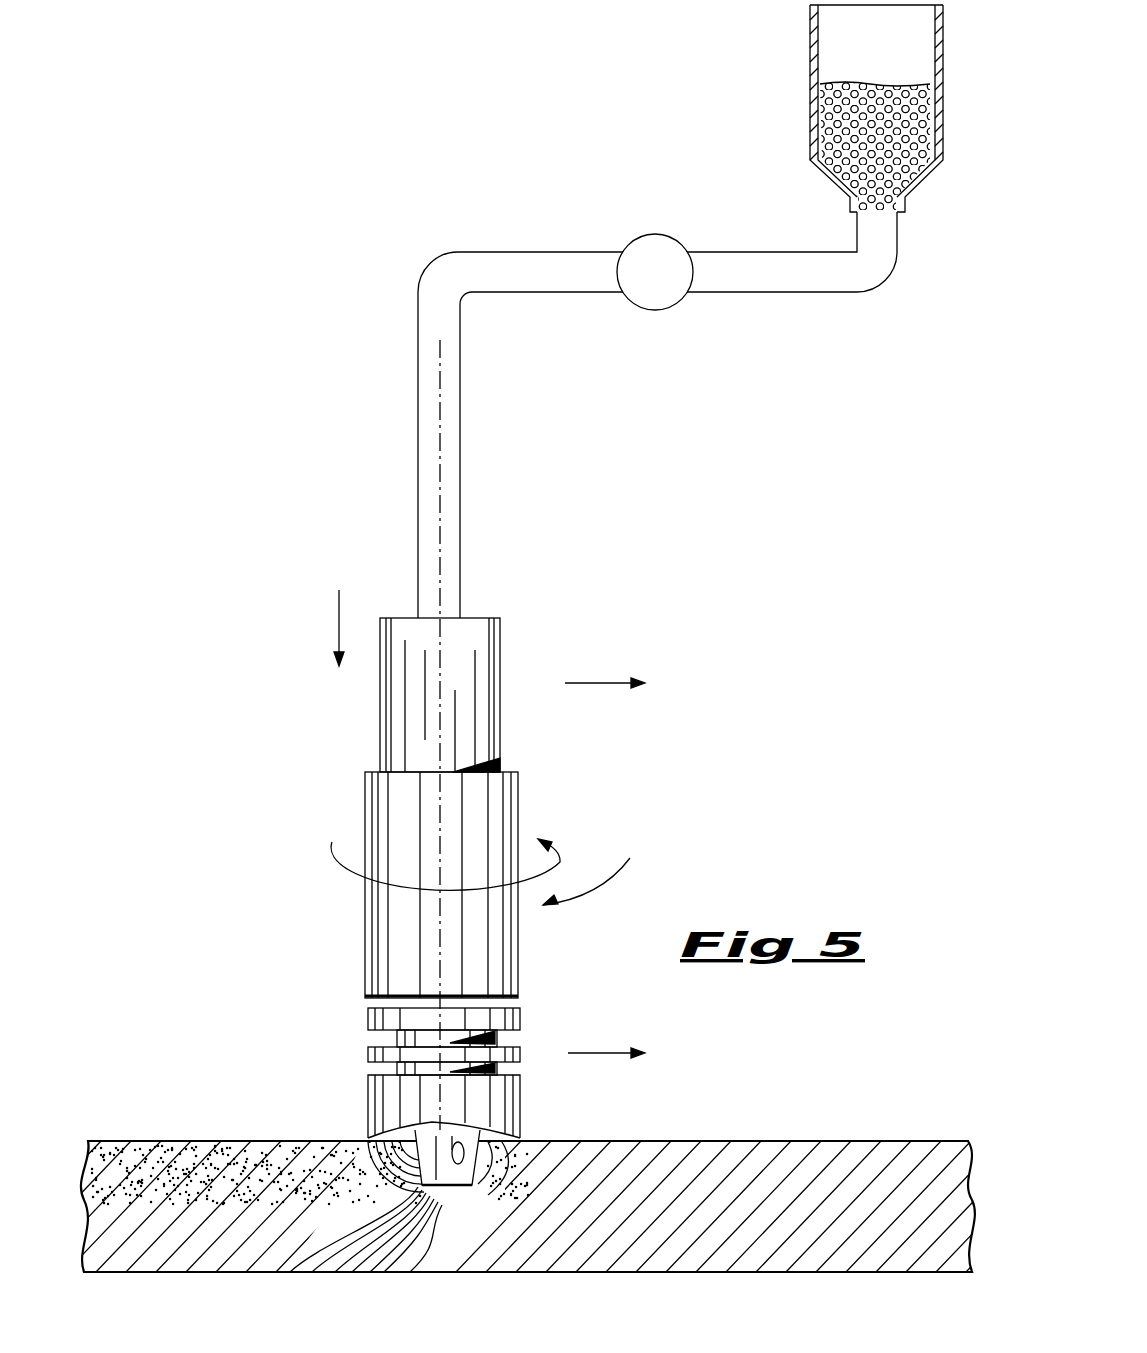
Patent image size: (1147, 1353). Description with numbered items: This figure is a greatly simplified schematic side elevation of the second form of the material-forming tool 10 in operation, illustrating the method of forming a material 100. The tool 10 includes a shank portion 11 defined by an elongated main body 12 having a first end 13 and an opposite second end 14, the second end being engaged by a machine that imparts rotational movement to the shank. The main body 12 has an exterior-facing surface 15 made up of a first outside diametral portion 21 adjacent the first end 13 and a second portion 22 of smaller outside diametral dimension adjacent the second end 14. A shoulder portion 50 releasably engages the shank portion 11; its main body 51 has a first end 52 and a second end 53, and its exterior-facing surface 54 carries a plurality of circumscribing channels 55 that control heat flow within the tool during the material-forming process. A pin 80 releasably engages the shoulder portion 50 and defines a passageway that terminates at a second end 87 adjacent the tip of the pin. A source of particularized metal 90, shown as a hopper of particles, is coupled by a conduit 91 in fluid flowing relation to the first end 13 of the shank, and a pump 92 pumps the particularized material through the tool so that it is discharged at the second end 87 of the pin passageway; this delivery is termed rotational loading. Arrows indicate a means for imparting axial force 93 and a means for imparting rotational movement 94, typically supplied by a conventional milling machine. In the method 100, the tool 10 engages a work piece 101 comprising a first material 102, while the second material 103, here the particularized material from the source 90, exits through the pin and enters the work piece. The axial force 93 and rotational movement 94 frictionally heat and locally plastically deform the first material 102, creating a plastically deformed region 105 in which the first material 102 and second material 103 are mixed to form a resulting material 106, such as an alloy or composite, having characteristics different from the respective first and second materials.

The material-forming tool 10 is at (290, 798).
The shank portion 11 is at (601, 867).
The elongated main body 12 is at (520, 783).
The first end 13 is at (522, 988).
The second end 14 is at (500, 620).
The exterior-facing surface 15 is at (502, 670).
The first outside diametral portion 21 is at (522, 942).
The second portion 22 is at (380, 737).
The shoulder portion 50 is at (306, 1100).
The main body 51 is at (505, 1088).
The first end 52 is at (523, 1132).
The second end 53 is at (522, 1006).
The exterior-facing surface 54 is at (523, 1108).
The circumscribing channels 55 is at (375, 1068).
The pin 80 is at (505, 1226).
The second end 87 is at (466, 1164).
The source of particularized metal 90 is at (810, 145).
The conduit 91 is at (443, 273).
The pump 92 is at (640, 250).
The axial force 93 is at (337, 608).
The rotational movement 94 is at (560, 862).
The method of forming a material 100 is at (770, 795).
The work piece 101 is at (823, 1082).
The first material 102 is at (885, 1188).
The second material 103 is at (815, 90).
The plastically deformed region 105 is at (396, 1215).
The resulting material 106 is at (236, 1210).